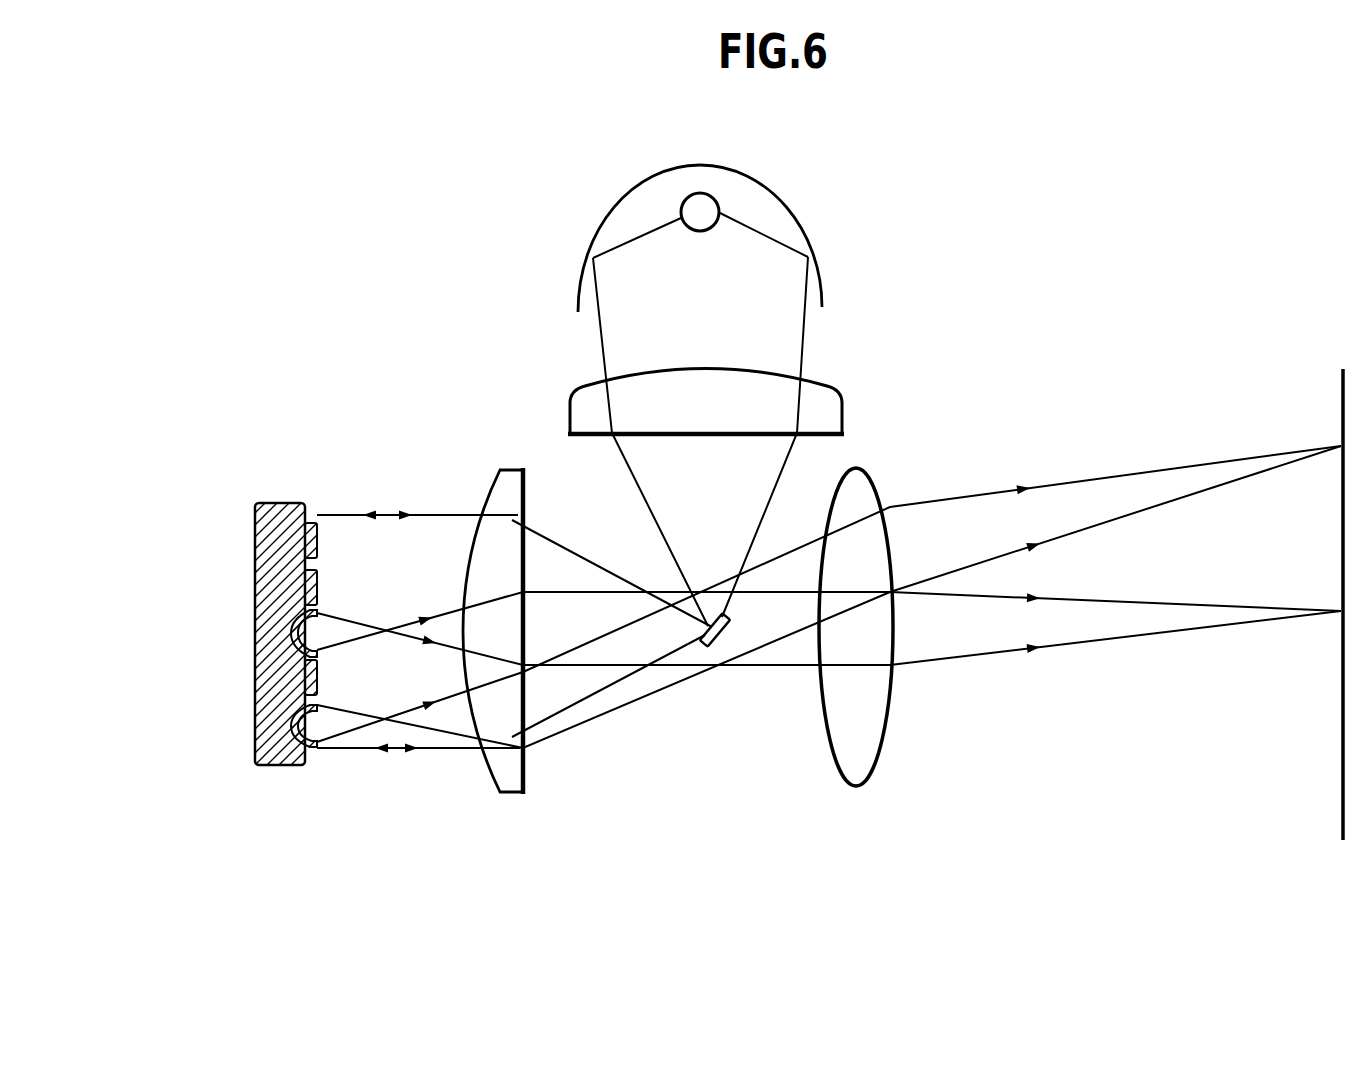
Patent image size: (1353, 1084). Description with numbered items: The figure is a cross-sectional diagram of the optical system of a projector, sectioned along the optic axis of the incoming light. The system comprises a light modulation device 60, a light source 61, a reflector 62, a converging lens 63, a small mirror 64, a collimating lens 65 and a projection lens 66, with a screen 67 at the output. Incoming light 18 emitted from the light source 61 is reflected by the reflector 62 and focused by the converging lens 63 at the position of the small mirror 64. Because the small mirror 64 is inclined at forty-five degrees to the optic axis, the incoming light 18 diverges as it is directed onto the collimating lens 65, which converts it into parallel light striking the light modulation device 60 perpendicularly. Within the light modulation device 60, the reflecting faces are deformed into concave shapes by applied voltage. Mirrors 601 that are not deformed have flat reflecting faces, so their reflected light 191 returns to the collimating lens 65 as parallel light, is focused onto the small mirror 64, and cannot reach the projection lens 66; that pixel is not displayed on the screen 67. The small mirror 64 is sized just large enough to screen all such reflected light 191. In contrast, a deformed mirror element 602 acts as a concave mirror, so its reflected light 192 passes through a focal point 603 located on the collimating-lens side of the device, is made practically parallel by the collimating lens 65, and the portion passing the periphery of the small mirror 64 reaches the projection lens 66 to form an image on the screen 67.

The incoming light 18 is at (807, 348).
The light modulation device 60 is at (278, 502).
The light source 61 is at (718, 211).
The reflector 62 is at (803, 235).
The converging lens 63 is at (848, 415).
The small mirror 64 is at (720, 640).
The collimating lens 65 is at (513, 778).
The projection lens 66 is at (876, 743).
The screen 67 is at (1343, 818).
The reflected light 191 is at (436, 514).
The reflected light 192 is at (451, 612).
The mirror 601 is at (308, 552).
The deformed mirror element 602 is at (296, 638).
The focal point 603 is at (380, 724).